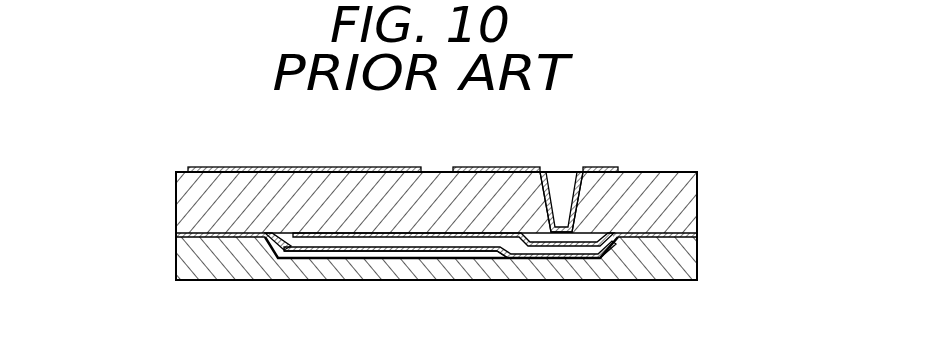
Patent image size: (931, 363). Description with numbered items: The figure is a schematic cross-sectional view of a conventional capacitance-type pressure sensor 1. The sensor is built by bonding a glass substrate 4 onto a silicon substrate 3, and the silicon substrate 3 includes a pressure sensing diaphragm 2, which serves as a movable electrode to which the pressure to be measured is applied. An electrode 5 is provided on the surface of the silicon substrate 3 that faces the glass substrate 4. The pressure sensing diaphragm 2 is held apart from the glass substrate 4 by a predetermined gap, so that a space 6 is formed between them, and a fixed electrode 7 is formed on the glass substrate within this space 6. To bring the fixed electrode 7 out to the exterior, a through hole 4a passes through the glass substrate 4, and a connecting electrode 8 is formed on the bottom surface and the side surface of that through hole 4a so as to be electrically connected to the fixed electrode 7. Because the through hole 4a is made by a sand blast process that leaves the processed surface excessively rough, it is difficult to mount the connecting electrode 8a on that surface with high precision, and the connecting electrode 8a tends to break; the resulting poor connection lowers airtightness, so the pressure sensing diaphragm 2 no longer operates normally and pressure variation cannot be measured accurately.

The capacitance-type pressure sensor 1 is at (736, 198).
The pressure sensing diaphragm 2 is at (357, 258).
The silicon substrate 3 is at (177, 267).
The glass substrate 4 is at (177, 205).
The through hole 4a is at (606, 190).
The electrode 5 is at (412, 253).
The space 6 is at (482, 256).
The fixed electrode 7 is at (312, 233).
The connecting electrode 8 is at (560, 185).
The connecting electrode 8a is at (572, 182).